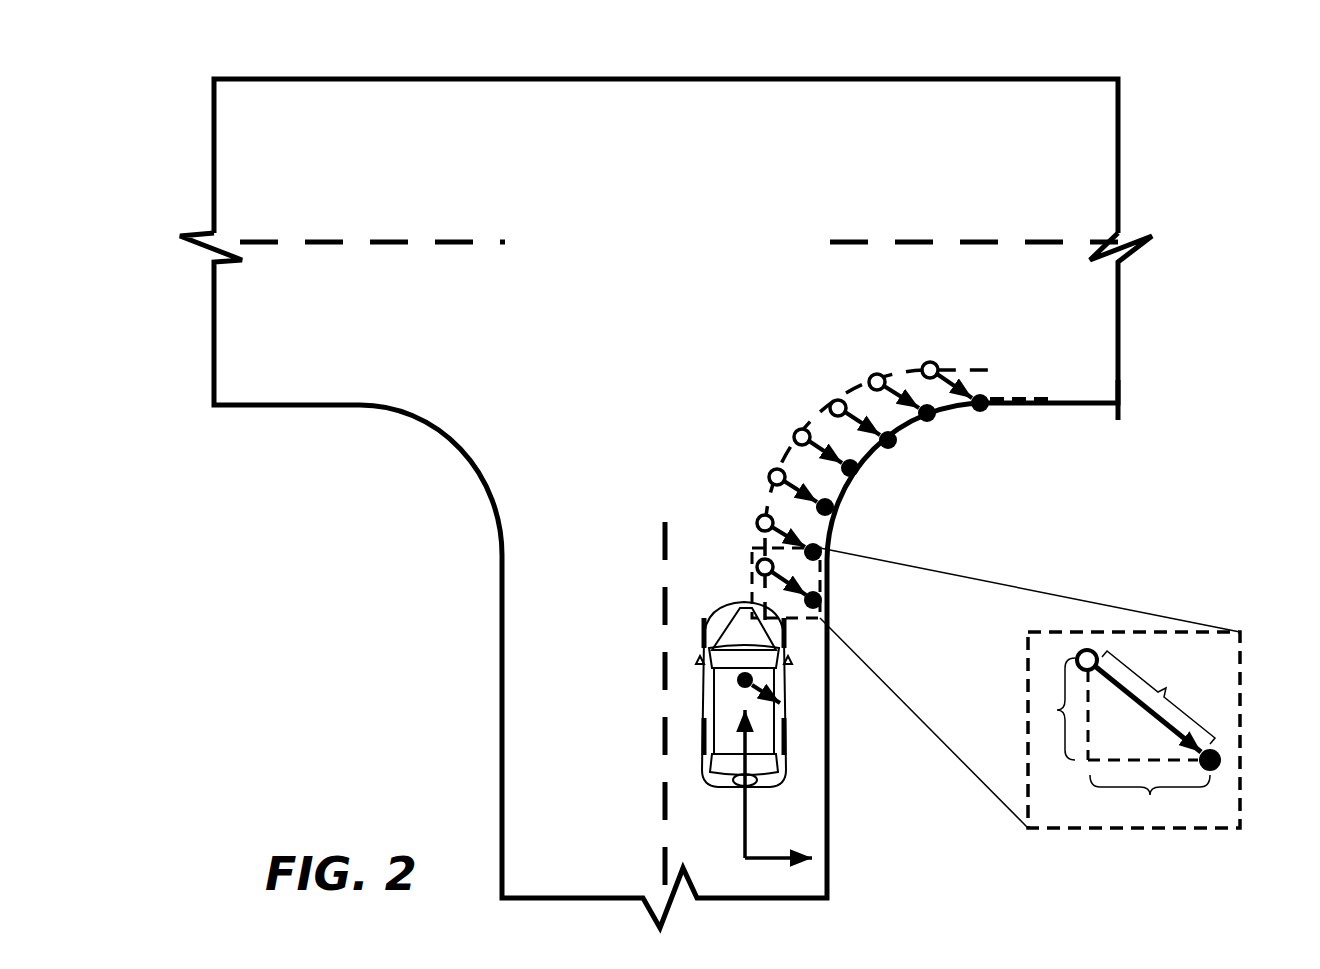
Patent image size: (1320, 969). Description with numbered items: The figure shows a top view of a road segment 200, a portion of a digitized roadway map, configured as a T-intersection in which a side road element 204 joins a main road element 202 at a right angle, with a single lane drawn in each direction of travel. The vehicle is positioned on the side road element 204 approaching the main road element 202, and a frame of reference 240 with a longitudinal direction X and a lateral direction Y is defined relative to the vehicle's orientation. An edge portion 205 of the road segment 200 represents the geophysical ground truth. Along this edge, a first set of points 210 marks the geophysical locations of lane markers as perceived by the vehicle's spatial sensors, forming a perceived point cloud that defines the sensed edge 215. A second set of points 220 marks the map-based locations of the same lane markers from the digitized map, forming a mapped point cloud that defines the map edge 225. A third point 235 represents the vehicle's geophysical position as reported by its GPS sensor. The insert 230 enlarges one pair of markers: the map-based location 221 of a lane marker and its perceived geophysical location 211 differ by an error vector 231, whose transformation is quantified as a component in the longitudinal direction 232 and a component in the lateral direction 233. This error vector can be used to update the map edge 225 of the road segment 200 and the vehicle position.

The road segment 200 is at (674, 76).
The main road element 202 is at (240, 162).
The side road element 204 is at (537, 693).
The edge portion 205 is at (1050, 410).
The first set of points 210 is at (859, 474).
The geophysical location of one lane marker 211 is at (1221, 767).
The sensed edge 215 is at (1037, 398).
The second set of points 220 is at (829, 410).
The map-based location of one lane marker 221 is at (1084, 649).
The map edge 225 is at (962, 370).
The insert 230 is at (1082, 816).
The error vector 231 is at (1168, 688).
The longitudinal direction (X) component 232 is at (1057, 710).
The lateral direction (Y) component 233 is at (1150, 795).
The third point 235 is at (740, 690).
The frame of reference 240 is at (733, 822).